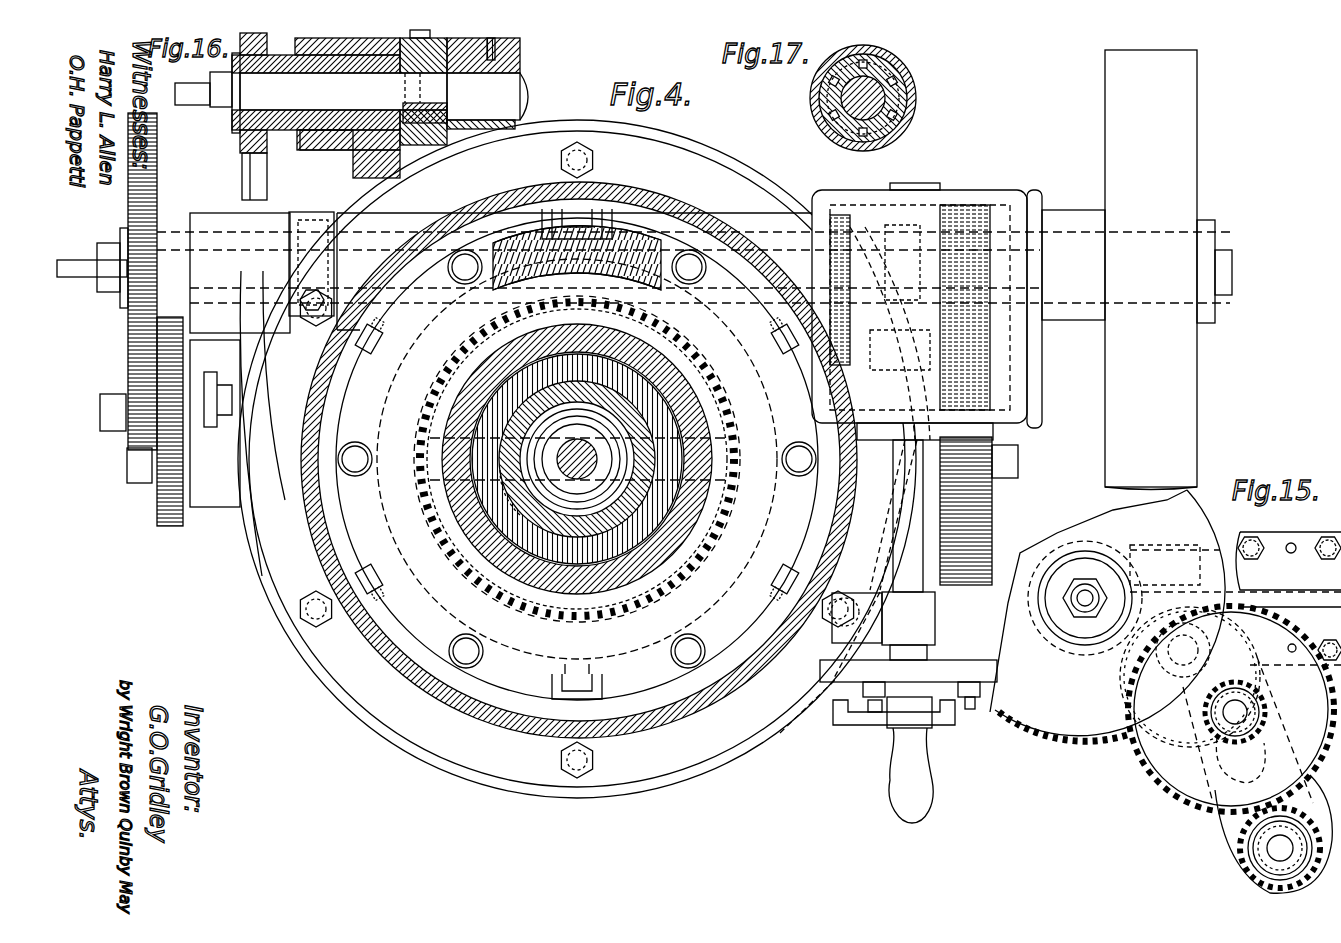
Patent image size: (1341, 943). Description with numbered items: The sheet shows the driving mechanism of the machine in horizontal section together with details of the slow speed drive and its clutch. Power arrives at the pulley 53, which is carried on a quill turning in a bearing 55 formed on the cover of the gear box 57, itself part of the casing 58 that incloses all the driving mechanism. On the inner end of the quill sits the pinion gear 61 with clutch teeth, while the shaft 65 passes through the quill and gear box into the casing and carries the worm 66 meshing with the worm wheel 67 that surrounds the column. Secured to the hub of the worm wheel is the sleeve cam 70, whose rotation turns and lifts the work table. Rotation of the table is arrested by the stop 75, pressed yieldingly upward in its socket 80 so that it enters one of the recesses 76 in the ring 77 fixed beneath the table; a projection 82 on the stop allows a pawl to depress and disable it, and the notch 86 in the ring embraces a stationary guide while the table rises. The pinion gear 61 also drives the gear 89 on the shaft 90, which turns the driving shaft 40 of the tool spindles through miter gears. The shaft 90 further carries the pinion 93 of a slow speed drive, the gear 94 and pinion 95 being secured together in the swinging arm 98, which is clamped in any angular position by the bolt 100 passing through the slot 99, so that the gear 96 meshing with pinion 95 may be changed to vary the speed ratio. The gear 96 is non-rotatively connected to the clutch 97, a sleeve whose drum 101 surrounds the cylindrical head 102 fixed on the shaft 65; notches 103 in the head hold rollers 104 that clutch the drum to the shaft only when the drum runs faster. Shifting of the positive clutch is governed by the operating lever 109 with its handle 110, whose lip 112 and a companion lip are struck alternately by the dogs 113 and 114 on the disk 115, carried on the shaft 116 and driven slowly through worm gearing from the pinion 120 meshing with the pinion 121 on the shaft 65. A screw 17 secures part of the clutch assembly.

In FIG. 16, the screw 17 is at (415, 143).
In FIG. 4, the driving shaft 40 is at (665, 400).
In FIG. 4, the pulley 53 is at (1105, 92).
In FIG. 4, the bearing 55 is at (1075, 215).
In FIG. 4, the gear box 57 is at (1033, 195).
In FIG. 4, the casing 58 is at (745, 690).
In FIG. 4, the pinion gear 61 is at (960, 215).
In FIG. 16, the shaft 65 is at (510, 98).
In FIG. 17, the shaft 65 is at (890, 100).
In FIG. 4, the worm 66 is at (630, 250).
In FIG. 4, the worm wheel 67 is at (577, 459).
In FIG. 4, the sleeve cam 70 is at (640, 372).
In FIG. 4, the stop 75 is at (455, 690).
In FIG. 4, the recesses 76 is at (468, 262).
In FIG. 4, the ring 77 is at (425, 270).
In FIG. 4, the socket 80 is at (578, 480).
In FIG. 4, the projection 82 is at (509, 555).
In FIG. 4, the notch 86 is at (580, 215).
In FIG. 4, the gear 89 is at (992, 530).
In FIG. 4, the shaft 90 is at (515, 463).
In FIG. 15, the shaft 90 is at (1240, 848).
In FIG. 15, the pinion 93 is at (1275, 850).
In FIG. 4, the gear 94 is at (165, 525).
In FIG. 15, the gear 94 is at (1240, 835).
In FIG. 15, the pinion 95 is at (1262, 708).
In FIG. 4, the gear 96 is at (154, 170).
In FIG. 16, the gear 96 is at (245, 170).
In FIG. 15, the gear 96 is at (1073, 728).
In FIG. 4, the clutch 97 is at (310, 213).
In FIG. 16, the clutch 97 is at (345, 150).
In FIG. 4, the arm 98 is at (215, 495).
In FIG. 15, the arm 98 is at (1165, 780).
In FIG. 15, the slot 99 is at (1240, 560).
In FIG. 4, the bolt 100 is at (225, 384).
In FIG. 15, the bolt 100 is at (1240, 540).
In FIG. 16, the drum 101 is at (380, 170).
In FIG. 17, the drum 101 is at (905, 70).
In FIG. 16, the cylindrical head 102 is at (447, 97).
In FIG. 17, the cylindrical head 102 is at (905, 95).
In FIG. 17, the notches 103 is at (830, 112).
In FIG. 17, the rollers 104 is at (838, 128).
In FIG. 4, the operating lever 109 is at (893, 715).
In FIG. 4, the handle 110 is at (900, 800).
In FIG. 4, the lip 112 is at (833, 712).
In FIG. 4, the dog 113 is at (870, 712).
In FIG. 4, the dog 114 is at (968, 712).
In FIG. 4, the disk 115 is at (950, 672).
In FIG. 4, the shaft 116 is at (900, 542).
In FIG. 4, the pinion 120 is at (720, 405).
In FIG. 4, the pinion 121 is at (852, 228).